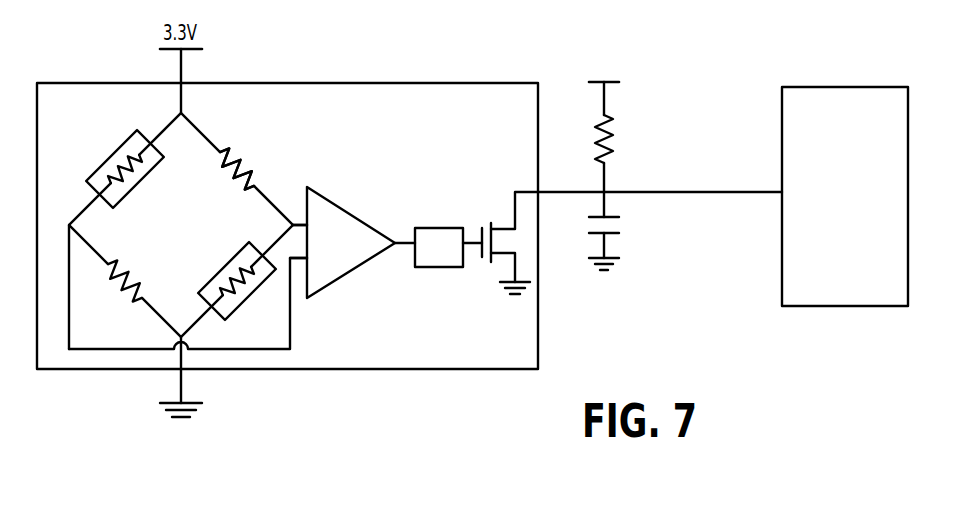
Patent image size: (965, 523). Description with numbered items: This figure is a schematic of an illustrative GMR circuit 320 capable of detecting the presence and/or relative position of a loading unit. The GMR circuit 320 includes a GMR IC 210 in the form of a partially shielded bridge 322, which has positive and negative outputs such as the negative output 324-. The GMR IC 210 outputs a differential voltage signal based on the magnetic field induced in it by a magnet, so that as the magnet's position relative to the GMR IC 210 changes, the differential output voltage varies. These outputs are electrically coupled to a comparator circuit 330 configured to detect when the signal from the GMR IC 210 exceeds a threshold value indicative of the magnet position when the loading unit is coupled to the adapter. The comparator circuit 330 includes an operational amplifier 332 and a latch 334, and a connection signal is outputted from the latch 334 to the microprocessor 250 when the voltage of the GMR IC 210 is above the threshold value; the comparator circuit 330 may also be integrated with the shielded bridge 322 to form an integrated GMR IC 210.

The GMR IC 210 is at (247, 144).
The partially shielded bridge 322 is at (264, 192).
The negative output 324- is at (296, 263).
The operational amplifier 332 is at (342, 215).
The latch 334 is at (437, 235).
The comparator circuit 330 is at (420, 297).
The GMR circuit 320 is at (652, 37).
The microprocessor 250 is at (869, 86).